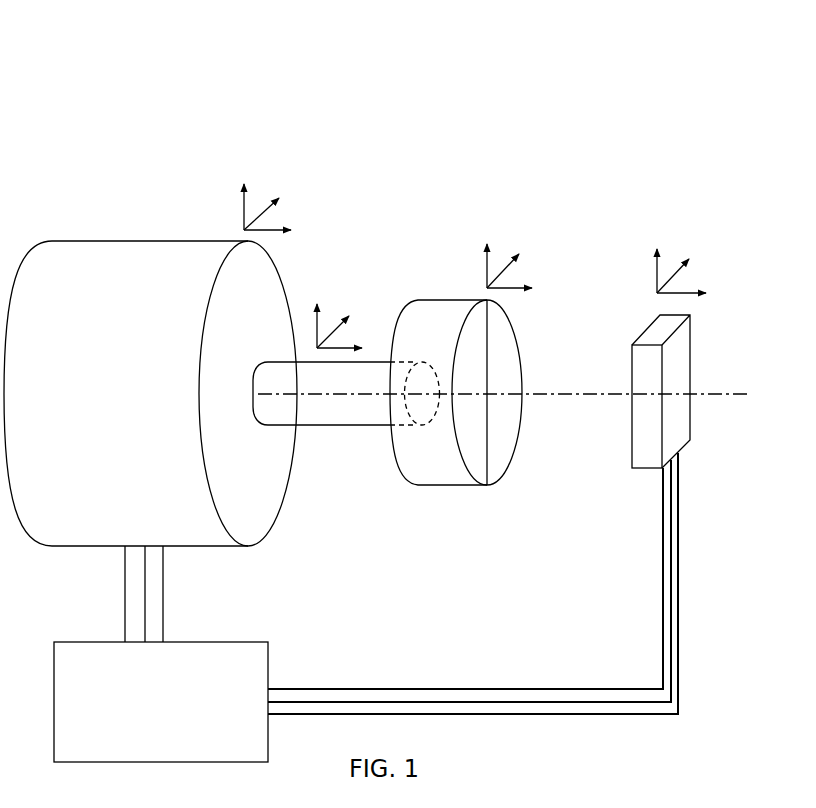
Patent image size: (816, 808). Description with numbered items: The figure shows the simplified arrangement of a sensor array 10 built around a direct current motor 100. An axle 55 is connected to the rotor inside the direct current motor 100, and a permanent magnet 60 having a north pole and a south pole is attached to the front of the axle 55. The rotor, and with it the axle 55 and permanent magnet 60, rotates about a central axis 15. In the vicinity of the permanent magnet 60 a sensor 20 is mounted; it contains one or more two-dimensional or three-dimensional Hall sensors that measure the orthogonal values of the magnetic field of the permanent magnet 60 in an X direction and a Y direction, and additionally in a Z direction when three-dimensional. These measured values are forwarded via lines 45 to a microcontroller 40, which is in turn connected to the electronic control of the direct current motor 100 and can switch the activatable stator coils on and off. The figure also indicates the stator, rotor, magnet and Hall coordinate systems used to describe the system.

The sensor array 10 is at (474, 106).
The direct current motor 100 is at (158, 398).
The axle 55 is at (348, 424).
The permanent magnet 60 is at (450, 480).
The central axis 15 is at (516, 395).
The sensor 20 is at (692, 345).
The lines 45 is at (678, 678).
The microcontroller 40 is at (161, 702).